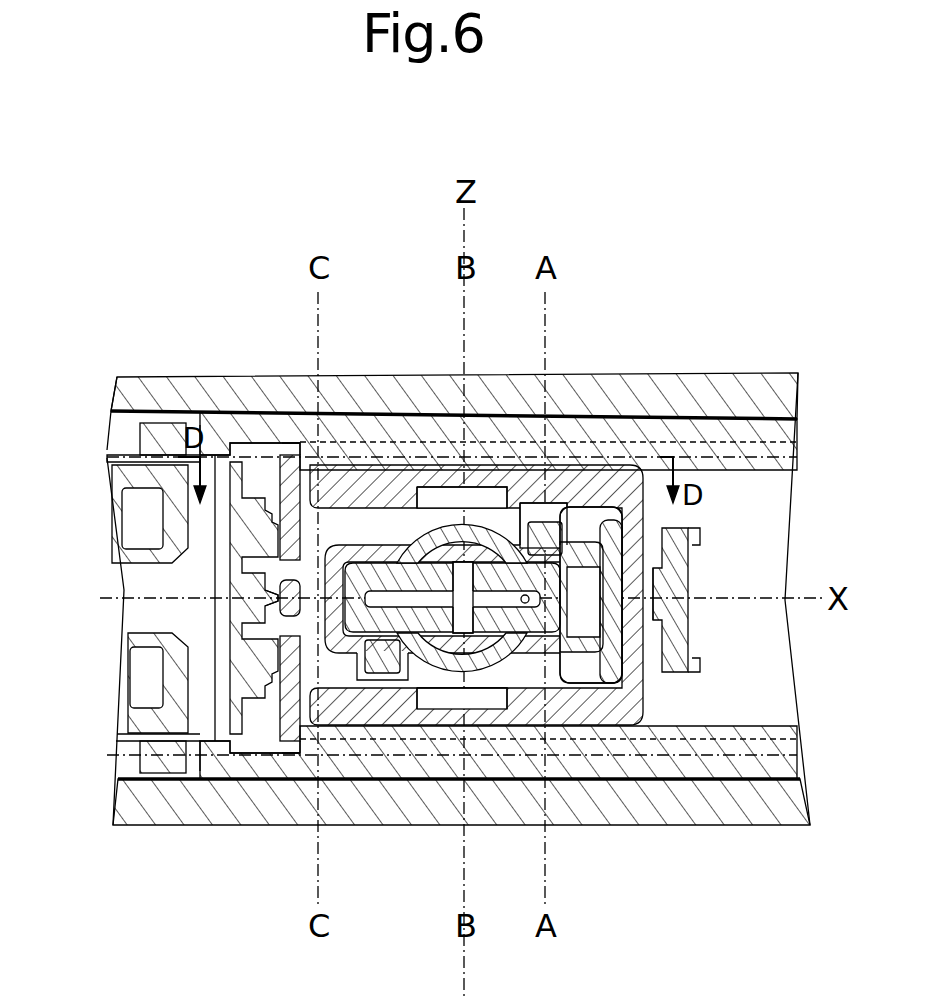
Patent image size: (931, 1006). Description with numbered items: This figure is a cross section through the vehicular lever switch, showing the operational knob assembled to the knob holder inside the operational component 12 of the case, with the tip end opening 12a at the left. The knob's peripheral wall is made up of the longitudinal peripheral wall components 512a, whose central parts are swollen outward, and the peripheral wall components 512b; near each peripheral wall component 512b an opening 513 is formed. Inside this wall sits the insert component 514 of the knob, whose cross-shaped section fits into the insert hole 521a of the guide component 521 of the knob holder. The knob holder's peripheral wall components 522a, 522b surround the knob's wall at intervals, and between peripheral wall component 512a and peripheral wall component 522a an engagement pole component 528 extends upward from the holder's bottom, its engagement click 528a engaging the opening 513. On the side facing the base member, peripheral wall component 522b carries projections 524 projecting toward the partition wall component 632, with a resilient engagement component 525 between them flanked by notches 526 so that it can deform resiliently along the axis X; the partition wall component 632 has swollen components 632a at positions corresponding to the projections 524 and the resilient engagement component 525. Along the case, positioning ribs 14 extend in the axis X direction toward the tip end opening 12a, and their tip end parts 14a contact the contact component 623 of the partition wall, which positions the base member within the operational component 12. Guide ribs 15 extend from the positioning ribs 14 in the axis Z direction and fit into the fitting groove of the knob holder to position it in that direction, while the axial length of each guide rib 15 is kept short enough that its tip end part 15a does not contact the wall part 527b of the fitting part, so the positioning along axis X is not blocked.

The operational component 12 is at (708, 392).
The tip end opening 12a is at (112, 405).
The positioning rib 14 is at (372, 440).
The tip end part 14a is at (218, 428).
The guide rib 15 is at (446, 470).
The tip end part 15a is at (298, 458).
The peripheral wall component 512a is at (462, 524).
The peripheral wall component 512b is at (265, 600).
The opening 513 is at (365, 655).
The insert component 514 is at (495, 705).
The guide component 521 is at (645, 575).
The insert hole 521a is at (580, 640).
The peripheral wall component 522a is at (345, 475).
The peripheral wall component 522b is at (318, 540).
The projection 524 is at (236, 462).
The resilient engagement component 525 is at (262, 598).
The notch 526 is at (185, 528).
The wall part 527b is at (283, 443).
The engagement pole component 528 is at (565, 560).
The engagement click 528a is at (540, 520).
The contact component 623 is at (165, 423).
The partition wall component 632 is at (140, 715).
The swollen component 632a is at (255, 520).